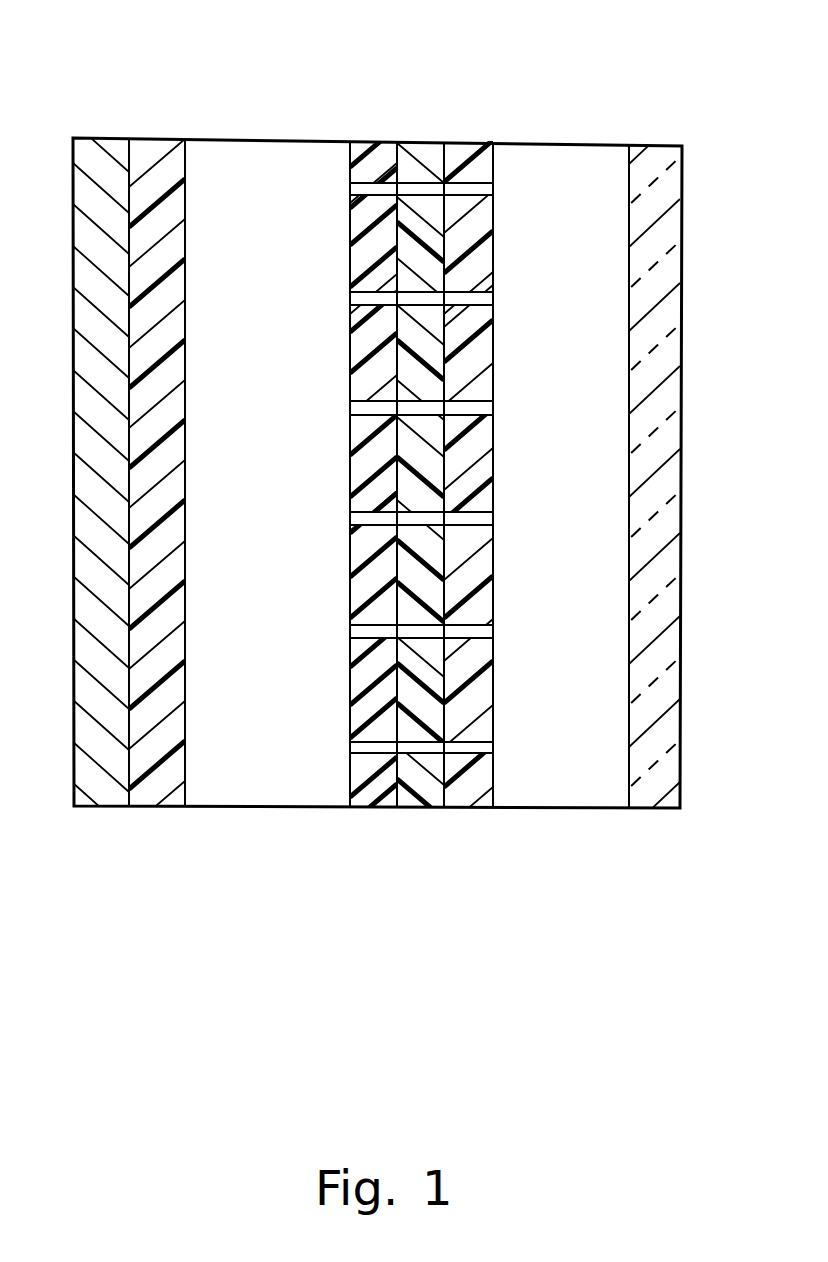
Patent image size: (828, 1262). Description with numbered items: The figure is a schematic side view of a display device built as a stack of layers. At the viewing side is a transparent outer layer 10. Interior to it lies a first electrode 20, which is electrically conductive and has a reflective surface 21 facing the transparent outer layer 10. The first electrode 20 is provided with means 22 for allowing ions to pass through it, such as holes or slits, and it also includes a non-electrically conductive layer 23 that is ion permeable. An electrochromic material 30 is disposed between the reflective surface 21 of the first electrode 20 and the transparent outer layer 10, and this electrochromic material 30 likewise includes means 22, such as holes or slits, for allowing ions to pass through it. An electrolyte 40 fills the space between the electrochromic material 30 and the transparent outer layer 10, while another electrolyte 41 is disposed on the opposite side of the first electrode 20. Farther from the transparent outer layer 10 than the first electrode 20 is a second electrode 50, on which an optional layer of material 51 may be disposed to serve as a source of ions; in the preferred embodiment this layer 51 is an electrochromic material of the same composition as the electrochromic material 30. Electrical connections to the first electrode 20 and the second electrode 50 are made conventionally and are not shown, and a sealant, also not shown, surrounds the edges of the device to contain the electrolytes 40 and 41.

The transparent outer layer 10 is at (655, 782).
The first electrode 20 is at (423, 788).
The reflective surface 21 is at (445, 788).
The means for allowing ions to pass 22 is at (355, 522).
The non-electrically conductive layer 23 is at (377, 788).
The electrochromic material 30 is at (460, 160).
The electrolyte 40 is at (563, 177).
The electrolyte 41 is at (272, 178).
The second electrode 50 is at (102, 785).
The optional layer of material 51 is at (160, 785).